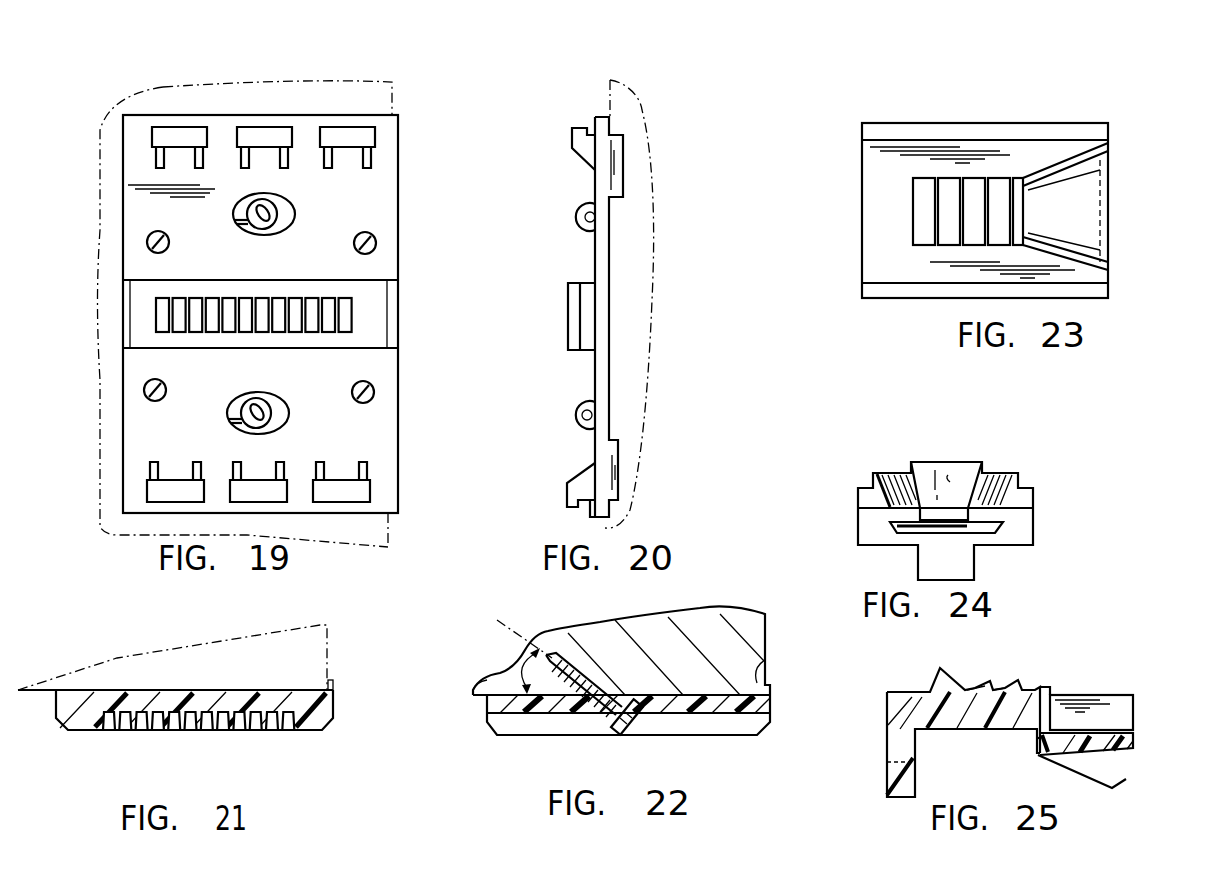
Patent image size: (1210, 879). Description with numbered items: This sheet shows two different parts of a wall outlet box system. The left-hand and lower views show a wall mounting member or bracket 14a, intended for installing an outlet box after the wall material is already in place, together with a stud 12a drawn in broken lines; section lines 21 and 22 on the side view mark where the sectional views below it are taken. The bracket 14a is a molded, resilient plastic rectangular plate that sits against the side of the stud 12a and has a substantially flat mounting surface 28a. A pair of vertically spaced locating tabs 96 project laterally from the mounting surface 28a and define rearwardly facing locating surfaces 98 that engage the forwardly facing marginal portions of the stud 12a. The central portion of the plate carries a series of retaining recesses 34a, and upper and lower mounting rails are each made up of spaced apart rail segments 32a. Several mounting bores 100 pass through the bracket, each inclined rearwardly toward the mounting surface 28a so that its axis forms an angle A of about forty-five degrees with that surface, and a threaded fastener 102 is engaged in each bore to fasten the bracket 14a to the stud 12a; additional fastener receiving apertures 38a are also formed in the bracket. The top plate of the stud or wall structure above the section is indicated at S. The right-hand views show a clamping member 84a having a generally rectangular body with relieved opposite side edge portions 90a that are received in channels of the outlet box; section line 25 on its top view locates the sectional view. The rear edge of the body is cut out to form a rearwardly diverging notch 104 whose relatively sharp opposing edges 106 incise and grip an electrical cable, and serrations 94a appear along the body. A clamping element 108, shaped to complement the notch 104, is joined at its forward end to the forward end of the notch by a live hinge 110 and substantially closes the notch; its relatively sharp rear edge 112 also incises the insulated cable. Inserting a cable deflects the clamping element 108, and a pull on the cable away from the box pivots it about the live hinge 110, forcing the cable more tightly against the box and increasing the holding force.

In FIG. 19, the stud 12a is at (362, 103).
In FIG. 20, the stud 12a is at (630, 112).
In FIG. 22, the stud 12a is at (753, 637).
In FIG. 19, the mounting bracket 14a is at (407, 138).
In FIG. 20, the mounting bracket 14a is at (580, 250).
In FIG. 21, the mounting bracket 14a is at (92, 738).
In FIG. 22, the mounting bracket 14a is at (515, 742).
In FIG. 19, the rail segments 32a is at (330, 130).
In FIG. 20, the rail segments 32a is at (582, 128).
In FIG. 19, the retaining recesses 34a is at (318, 333).
In FIG. 20, the retaining recesses 34a is at (581, 316).
In FIG. 21, the retaining recesses 34a is at (262, 732).
In FIG. 19, the fastener receiving apertures 38a is at (167, 237).
In FIG. 20, the fastener receiving apertures 38a is at (585, 316).
In FIG. 19, the mounting bores 100 is at (272, 208).
In FIG. 22, the mounting bores 100 is at (580, 692).
In FIG. 22, the threaded fastener 102 is at (647, 700).
In FIG. 20, the locating tabs 96 is at (618, 158).
In FIG. 22, the locating surfaces 98 is at (757, 670).
In FIG. 22, the mounting surface 28a is at (495, 676).
In FIG. 22, the angle A is at (536, 652).
In FIG. 21, the shelf S is at (330, 672).
In FIG. 23, the clamping member 84a is at (1011, 98).
In FIG. 24, the clamping member 84a is at (976, 450).
In FIG. 25, the clamping member 84a is at (1013, 668).
In FIG. 23, the relieved opposite side edge portions 90a is at (947, 131).
In FIG. 24, the relieved opposite side edge portions 90a is at (870, 486).
In FIG. 23, the serrations 94a is at (922, 247).
In FIG. 25, the serrations 94a is at (960, 682).
In FIG. 25, the rearwardly diverging notch 104 is at (1110, 713).
In FIG. 23, the sharp opposing edges 106 is at (1095, 162).
In FIG. 24, the sharp opposing edges 106 is at (888, 508).
In FIG. 23, the clamping element 108 is at (1070, 200).
In FIG. 24, the clamping element 108 is at (940, 530).
In FIG. 25, the live hinge 110 is at (1037, 738).
In FIG. 23, the rear edge 112 is at (1108, 232).
In FIG. 24, the rear edge 112 is at (948, 530).
In FIG. 25, the rear edge 112 is at (1126, 779).
In FIG. 19, the section line 21- 21 is at (68, 344).
In FIG. 19, the section line 22- 22 is at (75, 243).
In FIG. 23, the section line 25- 25 is at (803, 258).